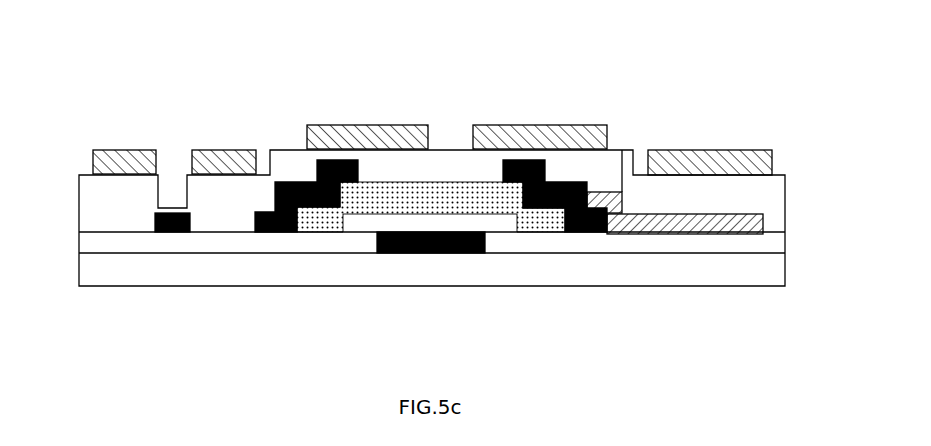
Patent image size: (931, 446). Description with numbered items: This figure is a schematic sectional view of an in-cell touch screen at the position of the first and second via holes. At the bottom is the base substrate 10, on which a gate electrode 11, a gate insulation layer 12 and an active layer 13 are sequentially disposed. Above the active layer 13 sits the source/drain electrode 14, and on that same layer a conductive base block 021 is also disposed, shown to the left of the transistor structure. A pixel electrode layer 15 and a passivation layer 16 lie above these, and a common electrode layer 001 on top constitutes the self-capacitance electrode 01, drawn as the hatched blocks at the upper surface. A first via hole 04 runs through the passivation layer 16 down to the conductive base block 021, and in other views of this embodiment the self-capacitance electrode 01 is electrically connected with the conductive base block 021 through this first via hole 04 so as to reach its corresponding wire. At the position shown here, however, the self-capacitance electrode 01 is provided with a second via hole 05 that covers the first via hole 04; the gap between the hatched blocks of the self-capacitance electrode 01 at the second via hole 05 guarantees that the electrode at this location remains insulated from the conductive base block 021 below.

The common electrode layer 001 is at (93, 164).
The self-capacitance electrode 01 is at (141, 169).
The first via hole 04 is at (173, 207).
The second via hole 05 is at (173, 166).
The conductive base block 021 is at (170, 233).
The base substrate 10 is at (637, 265).
The gate electrode 11 is at (423, 255).
The gate insulation layer 12 is at (533, 240).
The active layer 13 is at (370, 195).
The source/drain electrode 14 is at (505, 162).
The pixel electrode layer 15 is at (617, 190).
The passivation layer 16 is at (128, 207).